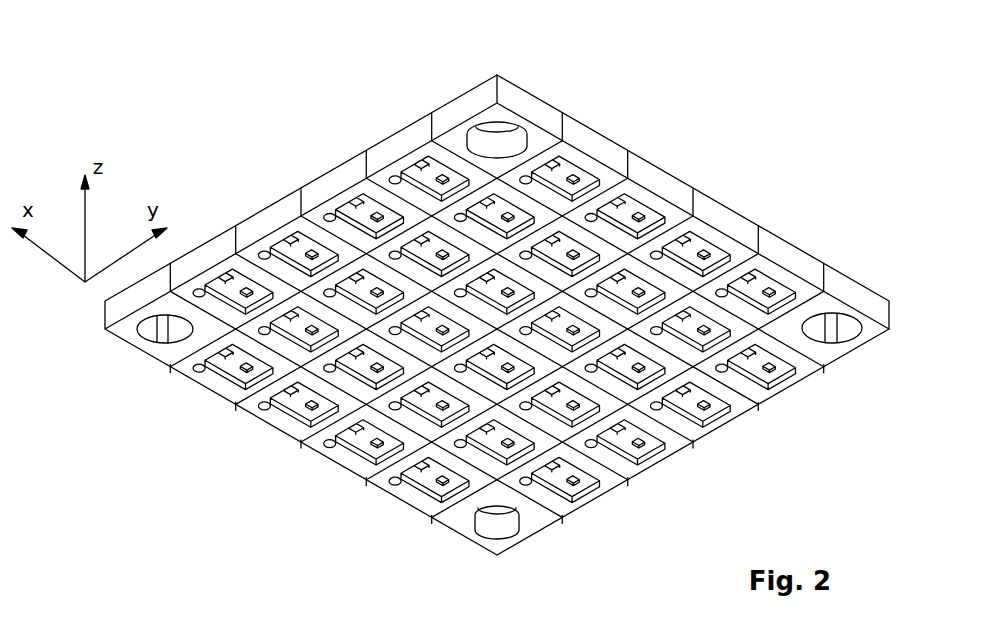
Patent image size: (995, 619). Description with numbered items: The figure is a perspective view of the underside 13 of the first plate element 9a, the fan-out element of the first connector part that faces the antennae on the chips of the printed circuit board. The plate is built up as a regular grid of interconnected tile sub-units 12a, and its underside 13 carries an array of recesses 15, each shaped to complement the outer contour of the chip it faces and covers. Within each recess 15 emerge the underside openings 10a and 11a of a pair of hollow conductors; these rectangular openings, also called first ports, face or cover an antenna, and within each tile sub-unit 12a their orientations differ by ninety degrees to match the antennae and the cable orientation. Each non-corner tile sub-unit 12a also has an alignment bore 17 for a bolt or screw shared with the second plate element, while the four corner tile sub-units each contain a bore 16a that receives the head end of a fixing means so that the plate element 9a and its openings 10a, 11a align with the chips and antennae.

The first plate element 9a is at (433, 92).
The tile sub-unit 12a is at (662, 183).
The underside 13 is at (777, 275).
The recess 15 is at (284, 256).
The underside opening 11a is at (308, 403).
The underside opening 10a is at (324, 447).
The alignment bore 17 is at (389, 486).
The bore 16a is at (498, 528).